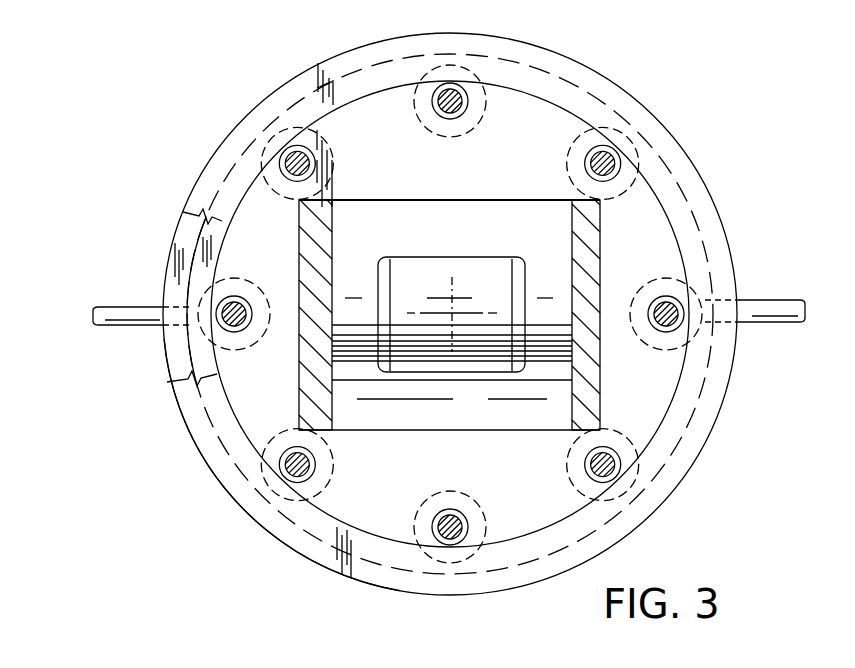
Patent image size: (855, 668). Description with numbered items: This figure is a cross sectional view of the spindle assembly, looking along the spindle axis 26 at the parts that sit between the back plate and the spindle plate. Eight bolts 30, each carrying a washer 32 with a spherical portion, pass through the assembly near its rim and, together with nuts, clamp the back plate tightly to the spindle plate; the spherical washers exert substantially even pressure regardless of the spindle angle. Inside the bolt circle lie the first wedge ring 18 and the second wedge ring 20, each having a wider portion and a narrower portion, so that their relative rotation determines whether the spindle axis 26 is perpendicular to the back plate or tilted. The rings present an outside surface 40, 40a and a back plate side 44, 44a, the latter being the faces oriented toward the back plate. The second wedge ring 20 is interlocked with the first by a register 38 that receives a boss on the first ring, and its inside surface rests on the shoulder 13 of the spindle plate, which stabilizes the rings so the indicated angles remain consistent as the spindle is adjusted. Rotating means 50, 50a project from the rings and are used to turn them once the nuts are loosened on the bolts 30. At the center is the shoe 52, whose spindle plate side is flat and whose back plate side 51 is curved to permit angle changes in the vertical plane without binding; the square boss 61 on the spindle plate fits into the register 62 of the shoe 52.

The shoulder 13 is at (675, 225).
The first wedge ring 18 is at (225, 493).
The second wedge ring 20 is at (167, 372).
The axis 26 is at (455, 312).
The bolts 30 is at (607, 157).
The washers 32 is at (632, 147).
The register 38 is at (196, 262).
The outside surface 40 is at (257, 533).
The outside surface 40a is at (160, 353).
The back plate side 44 is at (640, 503).
The back plate side 44a is at (183, 212).
The rotating means 50 is at (773, 312).
The rotating means 50a is at (96, 318).
The back plate side 51 is at (375, 222).
The shoe 52 is at (407, 202).
The square boss 61 is at (440, 268).
The register 62 is at (378, 346).